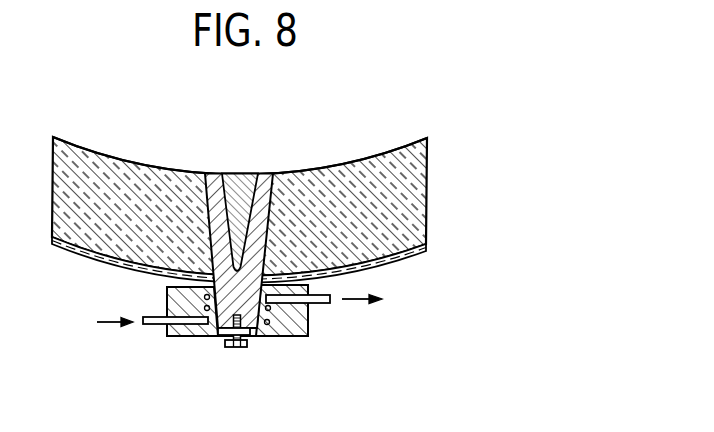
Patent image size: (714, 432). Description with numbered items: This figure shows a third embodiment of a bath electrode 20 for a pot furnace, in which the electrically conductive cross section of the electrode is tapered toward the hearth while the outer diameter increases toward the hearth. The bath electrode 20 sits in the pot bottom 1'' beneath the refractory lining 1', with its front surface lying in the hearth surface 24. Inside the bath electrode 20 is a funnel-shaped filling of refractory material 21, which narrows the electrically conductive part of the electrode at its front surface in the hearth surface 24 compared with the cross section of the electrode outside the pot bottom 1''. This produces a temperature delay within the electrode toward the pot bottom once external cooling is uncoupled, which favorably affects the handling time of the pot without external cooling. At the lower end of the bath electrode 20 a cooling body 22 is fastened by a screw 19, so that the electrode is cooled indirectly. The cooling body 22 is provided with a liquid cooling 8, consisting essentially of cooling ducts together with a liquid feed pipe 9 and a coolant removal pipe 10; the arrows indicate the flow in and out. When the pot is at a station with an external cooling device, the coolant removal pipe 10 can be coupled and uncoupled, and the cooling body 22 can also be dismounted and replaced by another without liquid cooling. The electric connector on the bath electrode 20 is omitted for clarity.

The refractory lining 1' is at (239, 179).
The pot bottom 1'' is at (227, 282).
The hearth surface 24 is at (146, 167).
The refractory material 21 is at (235, 176).
The bath electrode 20 is at (278, 178).
The liquid cooling 8 is at (168, 292).
The cooling body 22 is at (290, 323).
The liquid feed pipe 9 is at (148, 325).
The coolant removal pipe 10 is at (325, 303).
The screw 19 is at (235, 348).